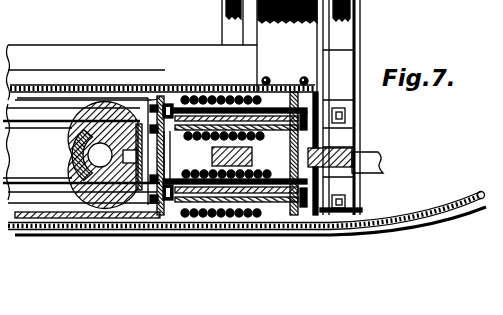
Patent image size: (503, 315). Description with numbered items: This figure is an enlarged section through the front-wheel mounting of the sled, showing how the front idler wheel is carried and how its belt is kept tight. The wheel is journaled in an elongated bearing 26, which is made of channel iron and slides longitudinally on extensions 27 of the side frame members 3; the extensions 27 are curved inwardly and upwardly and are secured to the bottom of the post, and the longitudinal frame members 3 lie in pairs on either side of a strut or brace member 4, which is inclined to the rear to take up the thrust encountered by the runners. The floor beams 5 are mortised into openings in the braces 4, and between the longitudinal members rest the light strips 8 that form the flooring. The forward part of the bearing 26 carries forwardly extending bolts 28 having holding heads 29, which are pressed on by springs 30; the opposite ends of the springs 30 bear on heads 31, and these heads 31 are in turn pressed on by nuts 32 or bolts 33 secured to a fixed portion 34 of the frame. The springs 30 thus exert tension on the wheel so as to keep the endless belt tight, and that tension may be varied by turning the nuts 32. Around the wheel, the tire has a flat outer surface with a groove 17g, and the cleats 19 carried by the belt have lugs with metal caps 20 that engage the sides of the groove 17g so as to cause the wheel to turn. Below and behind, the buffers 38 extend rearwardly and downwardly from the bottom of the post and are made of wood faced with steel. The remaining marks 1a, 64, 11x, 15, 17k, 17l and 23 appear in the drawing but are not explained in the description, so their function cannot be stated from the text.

The frame part 1a is at (17, 6).
The forwardly extending bolts 28 is at (291, 259).
The light strips 8 is at (142, 6).
The member 64 is at (122, 6).
The metal cap 20 is at (155, 6).
The member 11x is at (66, 16).
The cleats 19 is at (150, 21).
The plate 15 is at (53, 57).
The longitudinal frame members 3 is at (40, 81).
The floor beams 5 is at (227, 30).
The elongated bearing 26 is at (93, 74).
The extensions 27 is at (75, 232).
The groove 17g is at (100, 230).
The bearing body 17k is at (76, 141).
The bearing body part 17l is at (80, 160).
The bolts 23 is at (150, 108).
The nuts 32 is at (170, 84).
The heads 31 is at (178, 100).
The springs 30 is at (207, 100).
The strut or brace member 4 is at (212, 158).
The holding heads 29 is at (263, 100).
The bolts 33 is at (282, 108).
The fixed portion of the frame 34 is at (320, 181).
The buffers 38 is at (380, 153).